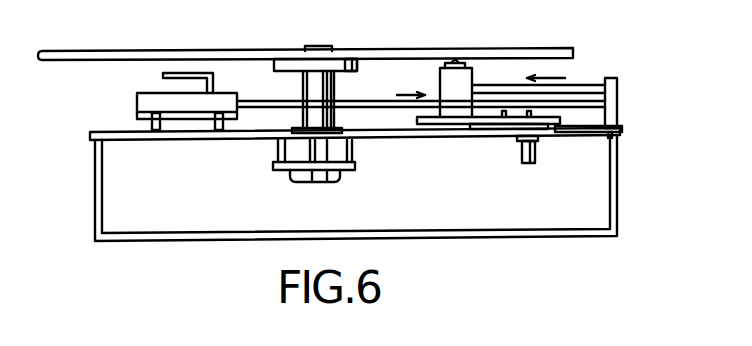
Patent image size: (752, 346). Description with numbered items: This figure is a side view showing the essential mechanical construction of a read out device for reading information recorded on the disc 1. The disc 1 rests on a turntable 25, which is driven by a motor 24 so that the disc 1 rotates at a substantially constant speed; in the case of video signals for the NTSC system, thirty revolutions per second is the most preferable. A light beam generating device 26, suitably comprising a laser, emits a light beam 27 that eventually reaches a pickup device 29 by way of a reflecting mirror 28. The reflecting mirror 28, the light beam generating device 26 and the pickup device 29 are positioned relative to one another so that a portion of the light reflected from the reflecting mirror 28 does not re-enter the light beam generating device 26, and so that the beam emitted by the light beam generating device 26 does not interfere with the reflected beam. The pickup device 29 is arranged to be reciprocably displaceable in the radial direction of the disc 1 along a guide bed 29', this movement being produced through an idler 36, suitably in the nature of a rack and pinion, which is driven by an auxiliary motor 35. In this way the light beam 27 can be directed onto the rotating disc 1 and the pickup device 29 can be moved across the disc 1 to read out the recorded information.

The disc 1 is at (311, 36).
The motor 24 is at (350, 172).
The turntable 25 is at (348, 60).
The light beam generating device 26 is at (226, 93).
The light beam 27 is at (338, 101).
The reflecting mirror 28 is at (613, 88).
The pickup device 29 is at (473, 66).
The guide bed 29' is at (482, 142).
The auxiliary motor 35 is at (537, 153).
The idler 36 is at (492, 133).